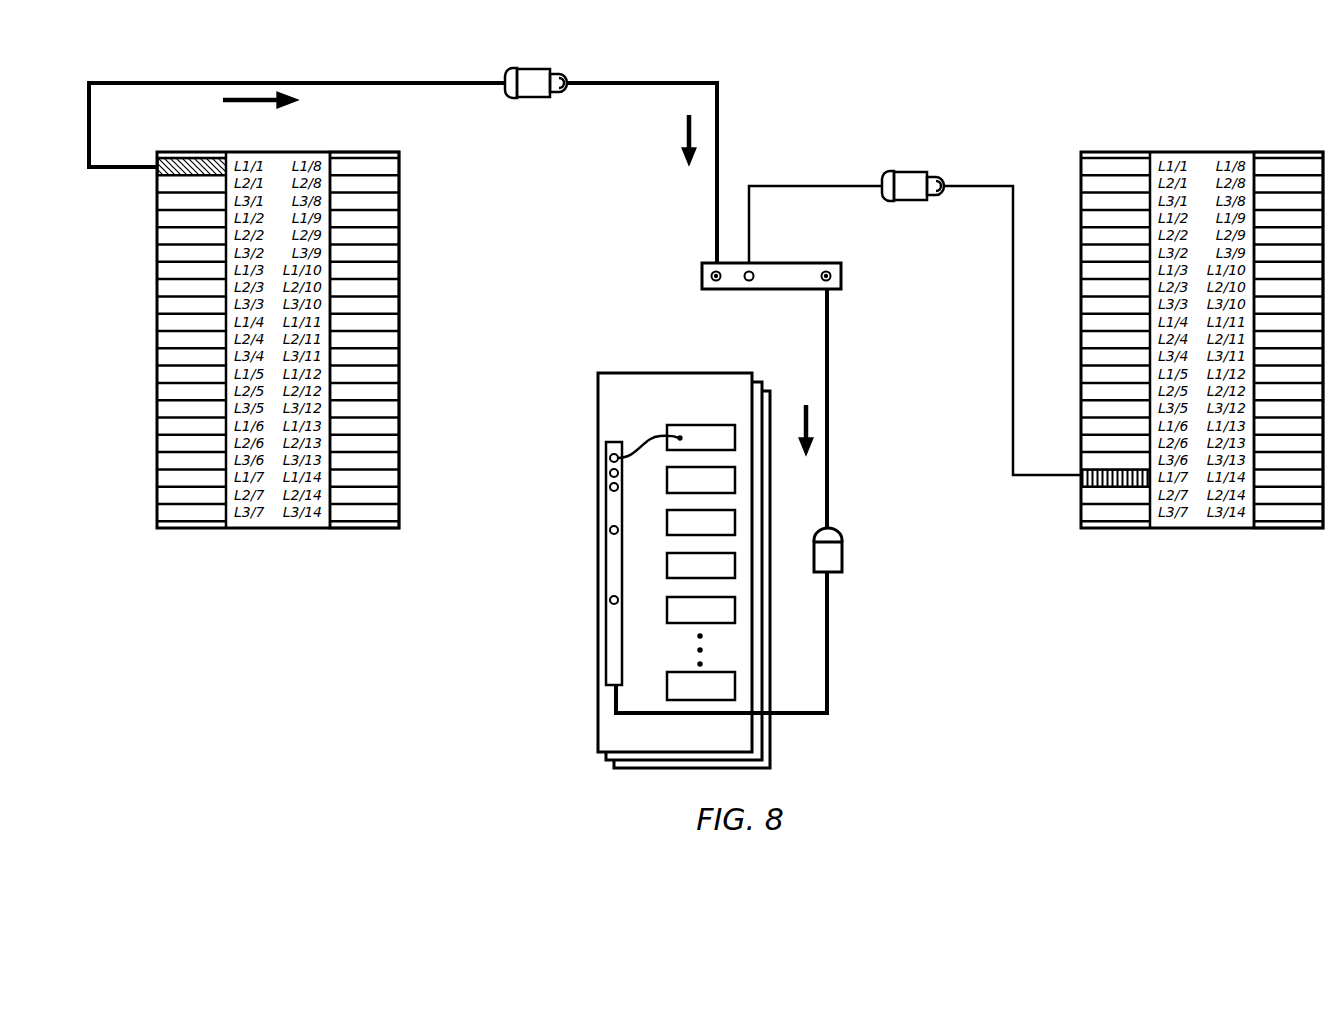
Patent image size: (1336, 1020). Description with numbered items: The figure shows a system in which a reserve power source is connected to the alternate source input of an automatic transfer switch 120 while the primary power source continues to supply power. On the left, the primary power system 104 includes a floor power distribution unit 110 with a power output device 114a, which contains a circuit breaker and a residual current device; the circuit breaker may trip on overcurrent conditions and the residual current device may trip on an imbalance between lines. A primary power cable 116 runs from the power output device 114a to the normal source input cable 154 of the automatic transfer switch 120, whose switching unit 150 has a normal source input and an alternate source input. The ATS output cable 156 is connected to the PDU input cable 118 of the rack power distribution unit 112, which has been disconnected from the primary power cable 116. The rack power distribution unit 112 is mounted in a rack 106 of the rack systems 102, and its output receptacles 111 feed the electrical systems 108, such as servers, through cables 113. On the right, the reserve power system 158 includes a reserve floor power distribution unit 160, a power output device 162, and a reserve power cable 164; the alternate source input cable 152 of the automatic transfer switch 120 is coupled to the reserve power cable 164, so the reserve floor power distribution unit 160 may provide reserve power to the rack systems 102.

The rack systems 102 is at (656, 539).
The primary power system 104 is at (276, 318).
The rack 106 is at (675, 562).
The electrical systems 108 is at (700, 425).
The floor power distribution unit 110 is at (370, 152).
The output receptacle 111 is at (606, 474).
The rack power distribution unit 112 is at (617, 442).
The cables 113 is at (640, 458).
The power output device 114a is at (157, 164).
The primary power cable 116 is at (437, 83).
The PDU input cable 118 is at (829, 627).
The automatic transfer switch 120 is at (750, 269).
The switching unit 150 is at (790, 292).
The alternate source input cable 152 is at (814, 191).
The normal source input cable 154 is at (638, 90).
The ATS output cable 156 is at (829, 490).
The reserve power system 158 is at (1163, 337).
The floor power distribution unit 160 is at (1297, 152).
The power output device 162 is at (1082, 477).
The reserve power cable 164 is at (1012, 312).